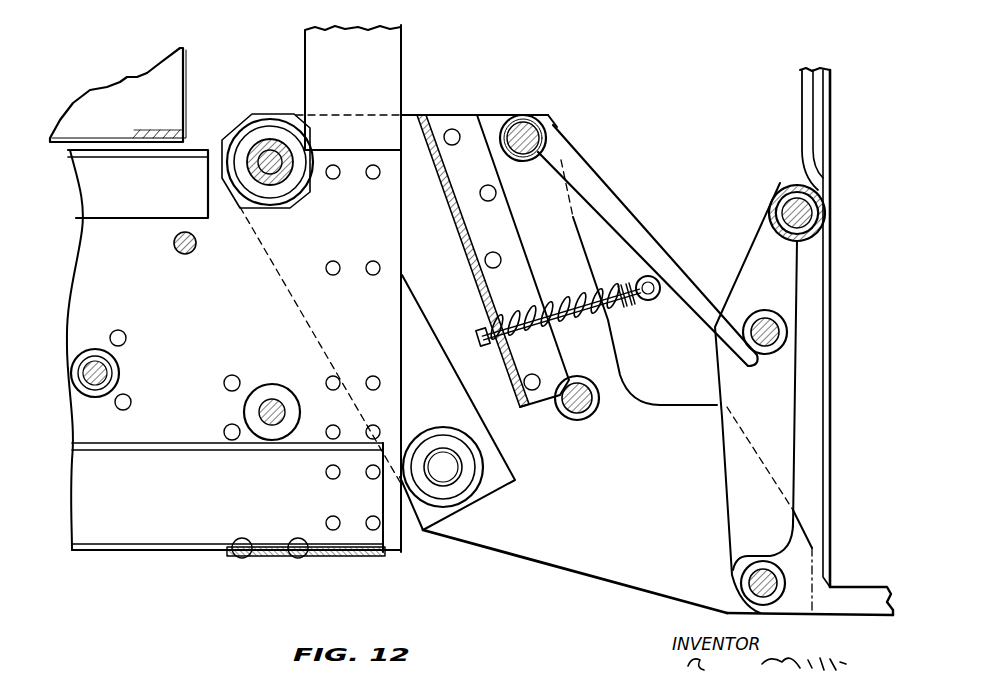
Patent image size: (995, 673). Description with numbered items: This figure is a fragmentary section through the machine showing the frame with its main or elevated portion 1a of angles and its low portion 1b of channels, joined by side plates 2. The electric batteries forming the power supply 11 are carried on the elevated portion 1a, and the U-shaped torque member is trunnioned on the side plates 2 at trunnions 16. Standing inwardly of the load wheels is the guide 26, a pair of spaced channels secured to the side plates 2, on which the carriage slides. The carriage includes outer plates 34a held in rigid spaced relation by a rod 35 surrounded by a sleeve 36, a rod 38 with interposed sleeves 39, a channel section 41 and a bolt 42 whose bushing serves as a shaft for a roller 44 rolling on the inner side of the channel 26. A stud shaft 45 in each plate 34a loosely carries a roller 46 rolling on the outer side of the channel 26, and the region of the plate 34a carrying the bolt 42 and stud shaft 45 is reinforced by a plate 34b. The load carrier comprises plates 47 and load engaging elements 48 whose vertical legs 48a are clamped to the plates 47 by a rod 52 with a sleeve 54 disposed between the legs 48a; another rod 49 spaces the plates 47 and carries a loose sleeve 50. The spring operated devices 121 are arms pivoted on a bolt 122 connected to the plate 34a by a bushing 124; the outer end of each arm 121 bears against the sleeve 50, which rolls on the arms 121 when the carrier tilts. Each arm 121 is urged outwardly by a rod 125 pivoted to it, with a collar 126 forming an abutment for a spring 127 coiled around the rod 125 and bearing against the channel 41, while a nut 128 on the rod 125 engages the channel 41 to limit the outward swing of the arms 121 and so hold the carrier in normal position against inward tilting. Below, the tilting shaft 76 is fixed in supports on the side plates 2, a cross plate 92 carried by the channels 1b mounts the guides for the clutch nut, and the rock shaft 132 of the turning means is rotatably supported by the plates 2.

The main or elevated frame portion 1a is at (118, 216).
The low frame portion 1b is at (136, 552).
The side plates 2 is at (148, 238).
The power supply 11 is at (172, 80).
The trunnions 16 is at (108, 372).
The guide 26 is at (392, 69).
The outer plates 34a is at (578, 572).
The reinforcing plate 34b is at (505, 466).
The rod 35 is at (772, 556).
The sleeve 36 is at (744, 568).
The rod 38 is at (599, 402).
The sleeves 39 is at (580, 416).
The channel section 41 is at (456, 226).
The bolt 42 is at (287, 152).
The roller 44 is at (270, 125).
The stud shaft 45 is at (446, 476).
The roller 46 is at (481, 487).
The plates 47 is at (745, 264).
The load engaging and supporting elements 48 is at (860, 592).
The vertical legs 48a is at (818, 383).
The rod 49 is at (777, 311).
The sleeve 50 is at (776, 354).
The rod 52 is at (815, 199).
The sleeve 54 is at (812, 232).
The shaft 76 is at (282, 402).
The cross plate 92 is at (263, 560).
The spring operated devices 121 is at (618, 213).
The bolt 122 is at (524, 118).
The bushing 124 is at (549, 118).
The rod 125 is at (574, 322).
The collar 126 is at (644, 302).
The spring 127 is at (576, 297).
The nut 128 is at (490, 343).
The rock shaft 132 is at (196, 250).